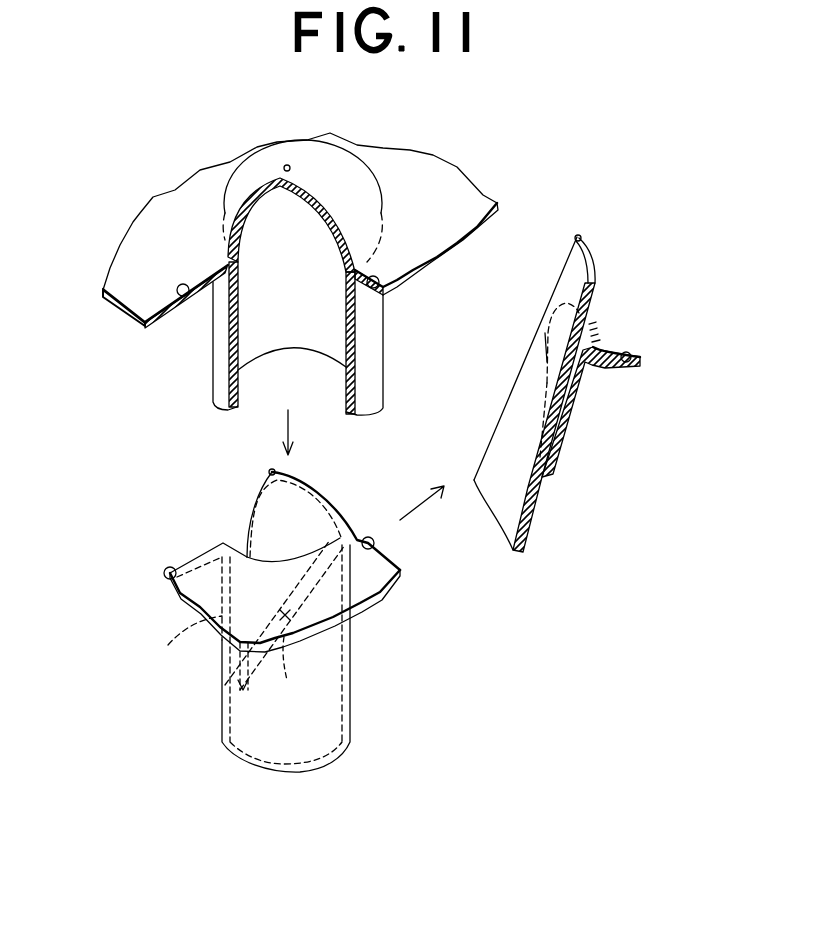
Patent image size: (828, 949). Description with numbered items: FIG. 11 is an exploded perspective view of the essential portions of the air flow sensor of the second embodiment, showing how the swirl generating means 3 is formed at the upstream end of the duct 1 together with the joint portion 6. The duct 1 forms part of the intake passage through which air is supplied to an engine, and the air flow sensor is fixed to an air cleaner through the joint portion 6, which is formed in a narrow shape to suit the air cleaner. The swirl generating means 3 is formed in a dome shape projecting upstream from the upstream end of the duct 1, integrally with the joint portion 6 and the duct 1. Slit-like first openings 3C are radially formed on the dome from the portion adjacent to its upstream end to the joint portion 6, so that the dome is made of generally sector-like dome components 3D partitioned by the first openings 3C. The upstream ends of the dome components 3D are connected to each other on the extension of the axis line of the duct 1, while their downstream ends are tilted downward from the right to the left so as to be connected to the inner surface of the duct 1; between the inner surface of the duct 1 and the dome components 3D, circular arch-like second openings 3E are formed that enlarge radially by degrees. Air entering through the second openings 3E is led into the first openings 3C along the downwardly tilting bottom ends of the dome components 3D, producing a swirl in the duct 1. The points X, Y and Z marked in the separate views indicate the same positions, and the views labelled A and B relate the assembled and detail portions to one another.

The duct 1 is at (363, 357).
The swirl generating means 3 is at (265, 170).
The first openings 3C is at (185, 642).
The dome components 3D is at (292, 507).
The second openings 3E is at (284, 652).
The joint portion 6 is at (427, 186).
The point X is at (183, 290).
The point Y is at (375, 278).
The point Z is at (289, 164).
The direction A is at (336, 765).
The direction B is at (575, 467).